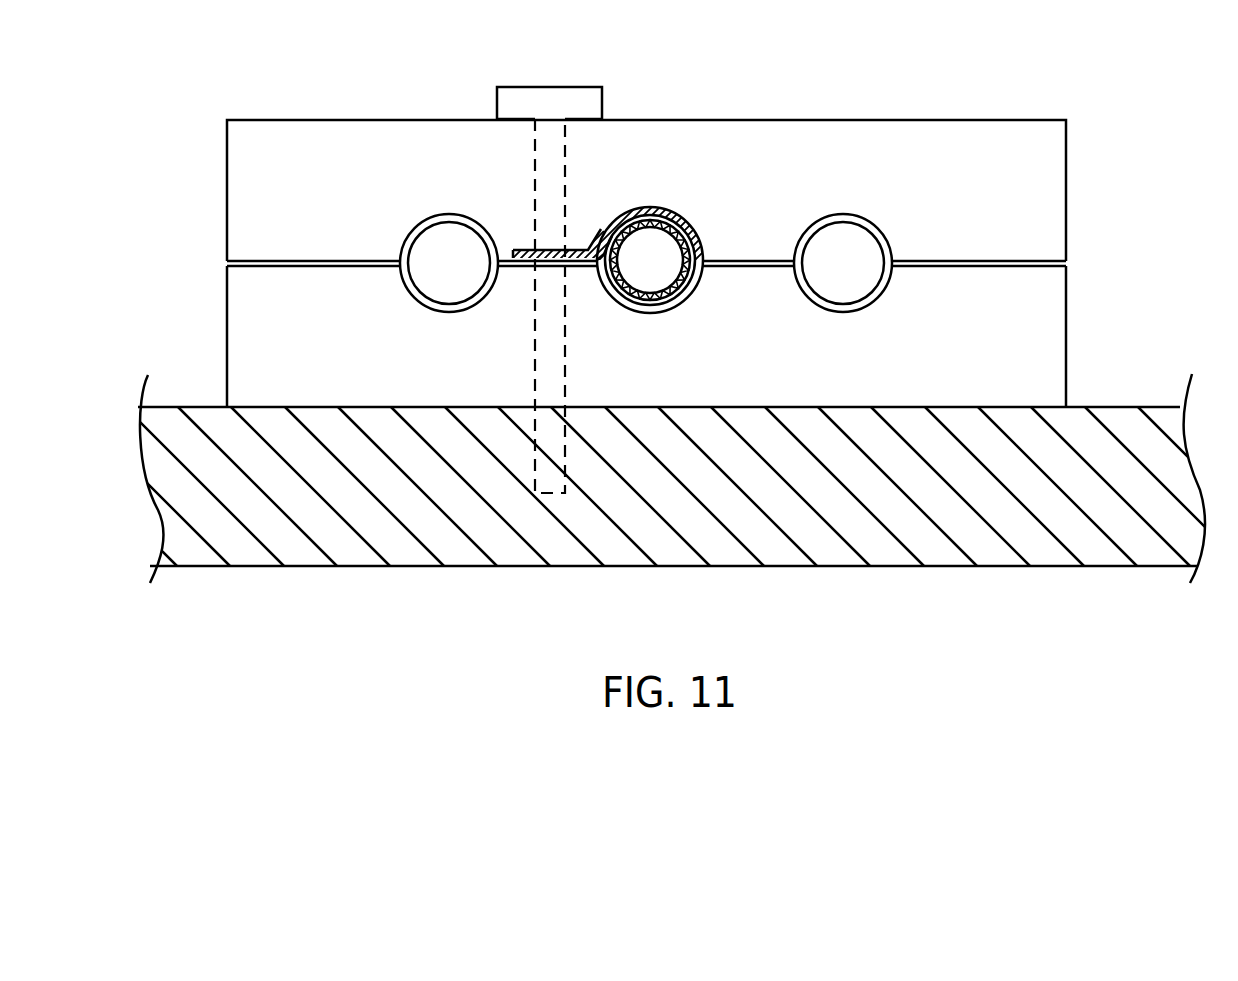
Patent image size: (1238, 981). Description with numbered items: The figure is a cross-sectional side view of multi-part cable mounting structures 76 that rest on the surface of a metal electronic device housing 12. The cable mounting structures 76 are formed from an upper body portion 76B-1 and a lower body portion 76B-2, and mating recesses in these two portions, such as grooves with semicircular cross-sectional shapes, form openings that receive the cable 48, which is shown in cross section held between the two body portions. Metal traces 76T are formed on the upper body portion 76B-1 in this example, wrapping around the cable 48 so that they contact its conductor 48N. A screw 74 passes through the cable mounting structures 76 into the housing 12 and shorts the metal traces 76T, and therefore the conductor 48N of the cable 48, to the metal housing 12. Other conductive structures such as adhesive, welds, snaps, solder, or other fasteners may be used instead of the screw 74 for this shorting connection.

The metal housing 12 is at (863, 567).
The cable 48 is at (450, 290).
The conductor 48N is at (620, 293).
The screw 74 is at (580, 102).
The cable mounting structures 76 is at (641, 260).
The upper body portion 76B-1 is at (232, 187).
The lower body portion 76B-2 is at (232, 330).
The metal traces 76T is at (669, 208).